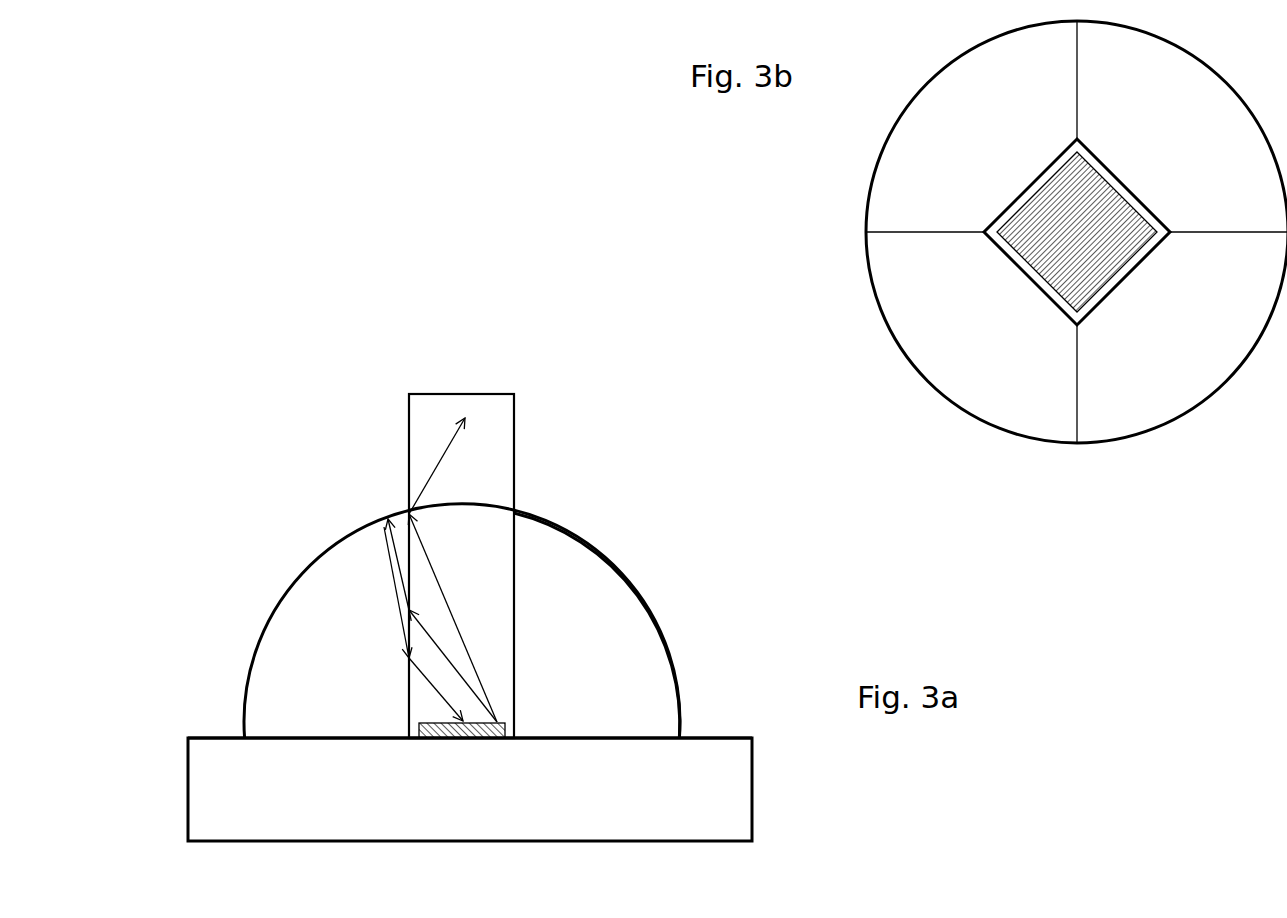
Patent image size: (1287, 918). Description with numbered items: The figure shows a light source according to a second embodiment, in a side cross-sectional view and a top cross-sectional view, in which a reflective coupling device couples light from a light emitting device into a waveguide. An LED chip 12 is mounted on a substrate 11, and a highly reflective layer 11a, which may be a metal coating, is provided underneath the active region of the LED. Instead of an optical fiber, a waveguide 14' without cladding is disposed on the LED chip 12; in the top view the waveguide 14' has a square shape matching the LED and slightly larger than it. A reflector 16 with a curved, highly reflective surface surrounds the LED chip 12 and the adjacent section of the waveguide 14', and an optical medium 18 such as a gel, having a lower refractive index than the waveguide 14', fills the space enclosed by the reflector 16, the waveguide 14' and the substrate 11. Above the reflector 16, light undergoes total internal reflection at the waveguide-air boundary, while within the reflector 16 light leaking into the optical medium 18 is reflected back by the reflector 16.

In FIG. 3a, the substrate 11 is at (733, 793).
In FIG. 3a, the highly reflective layer 11a is at (473, 738).
In FIG. 3a, the LED chip 12 is at (507, 720).
In FIG. 3b, the LED chip 12 is at (1148, 208).
In FIG. 3a, the waveguide 14' is at (428, 566).
In FIG. 3b, the waveguide 14' is at (1048, 232).
In FIG. 3a, the reflector 16 is at (308, 567).
In FIG. 3b, the reflector 16 is at (866, 203).
In FIG. 3a, the optical medium 18 is at (657, 688).